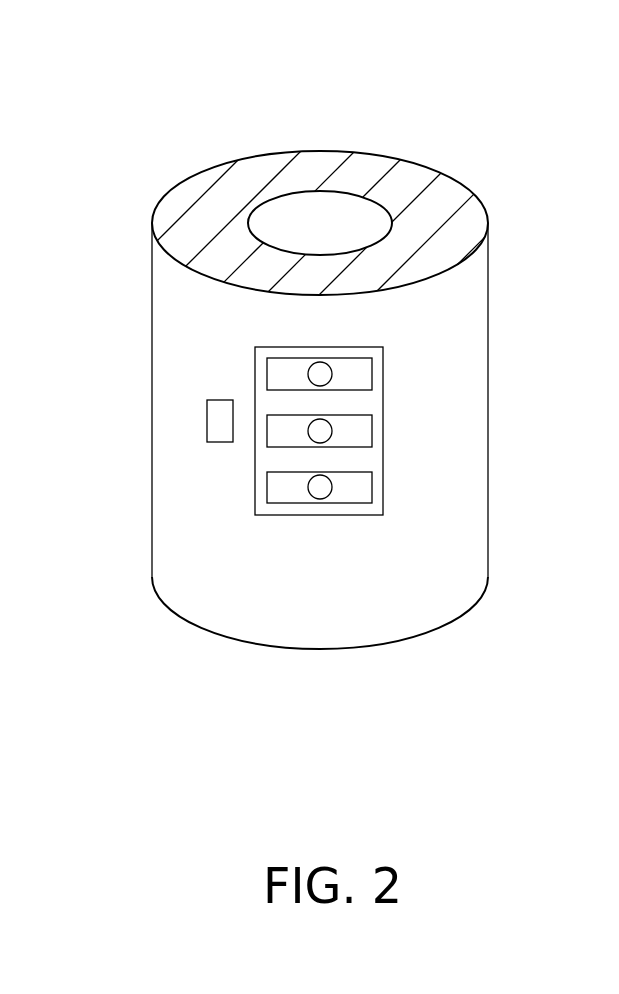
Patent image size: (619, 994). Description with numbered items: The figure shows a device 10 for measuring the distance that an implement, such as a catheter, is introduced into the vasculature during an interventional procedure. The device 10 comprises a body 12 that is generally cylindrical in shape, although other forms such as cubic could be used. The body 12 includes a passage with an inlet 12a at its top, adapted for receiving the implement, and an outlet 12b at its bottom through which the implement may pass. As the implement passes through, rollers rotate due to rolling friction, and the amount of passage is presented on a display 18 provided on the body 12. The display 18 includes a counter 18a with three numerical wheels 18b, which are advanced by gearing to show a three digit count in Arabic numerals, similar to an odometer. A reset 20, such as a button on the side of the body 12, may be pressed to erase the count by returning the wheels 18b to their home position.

The device 10 is at (536, 118).
The body 12 is at (488, 380).
The inlet 12a is at (314, 185).
The outlet 12b is at (380, 664).
The display 18 is at (284, 566).
The counter 18a is at (377, 352).
The numerical wheels 18b is at (372, 372).
The reset 20 is at (222, 420).